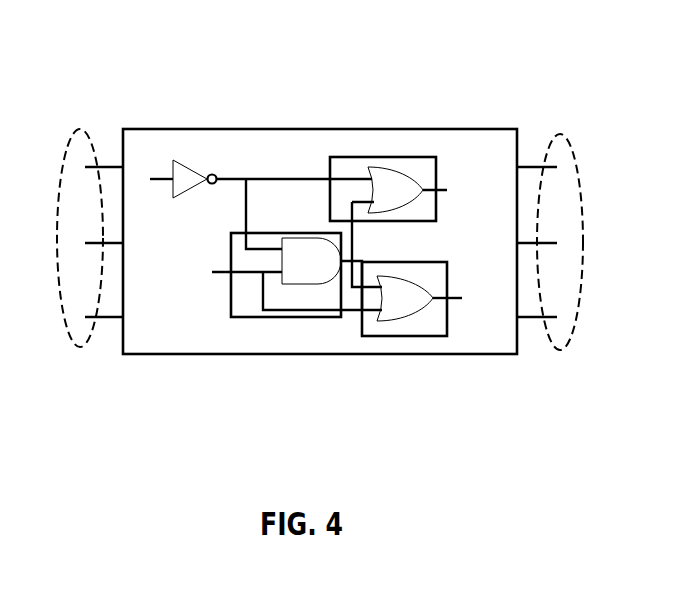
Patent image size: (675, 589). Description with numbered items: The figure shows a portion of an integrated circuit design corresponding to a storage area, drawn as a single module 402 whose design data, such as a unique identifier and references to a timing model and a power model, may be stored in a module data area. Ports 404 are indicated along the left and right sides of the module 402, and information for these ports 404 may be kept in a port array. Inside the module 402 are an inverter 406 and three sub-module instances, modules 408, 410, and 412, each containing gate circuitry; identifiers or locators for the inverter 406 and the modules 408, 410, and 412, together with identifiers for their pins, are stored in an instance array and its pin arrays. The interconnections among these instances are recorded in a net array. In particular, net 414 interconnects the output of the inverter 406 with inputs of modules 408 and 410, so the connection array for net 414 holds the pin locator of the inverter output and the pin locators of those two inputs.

The module 402 is at (227, 354).
The ports 404 is at (559, 132).
The inverter 406 is at (199, 228).
The module 408 is at (240, 318).
The module 410 is at (462, 153).
The module 412 is at (448, 278).
The net 414 is at (307, 178).